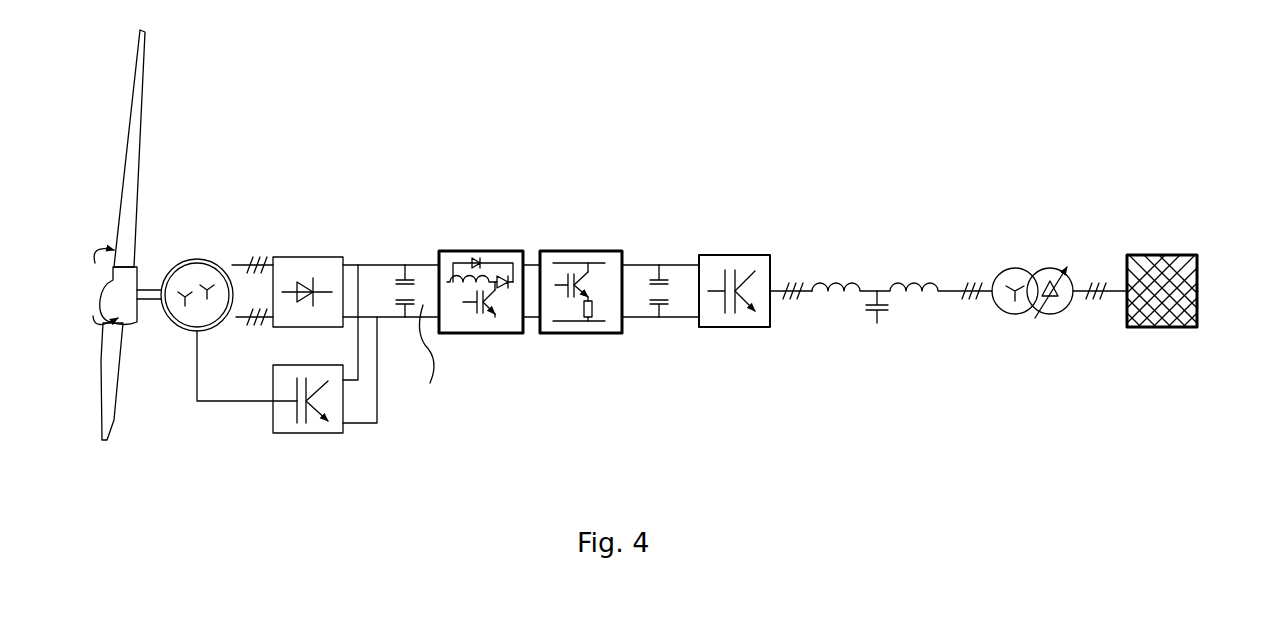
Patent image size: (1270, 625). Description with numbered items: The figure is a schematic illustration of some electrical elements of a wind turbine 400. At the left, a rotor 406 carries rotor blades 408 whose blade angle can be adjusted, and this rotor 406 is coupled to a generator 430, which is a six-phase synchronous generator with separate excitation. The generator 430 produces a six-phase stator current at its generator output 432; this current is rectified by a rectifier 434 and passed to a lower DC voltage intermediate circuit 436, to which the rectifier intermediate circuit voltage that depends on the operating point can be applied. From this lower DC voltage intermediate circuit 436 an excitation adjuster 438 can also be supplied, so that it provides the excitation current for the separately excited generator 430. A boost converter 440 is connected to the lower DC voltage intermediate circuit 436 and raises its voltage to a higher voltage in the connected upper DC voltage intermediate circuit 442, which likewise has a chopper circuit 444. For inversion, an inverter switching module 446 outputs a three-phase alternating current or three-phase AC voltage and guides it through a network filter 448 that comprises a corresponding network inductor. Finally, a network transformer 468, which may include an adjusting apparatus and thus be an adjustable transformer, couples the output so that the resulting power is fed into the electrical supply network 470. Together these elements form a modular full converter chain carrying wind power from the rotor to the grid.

The wind turbine 400 is at (514, 84).
The rotor 406 is at (150, 187).
The rotor blades 408 is at (141, 90).
The generator 430 is at (197, 258).
The generator output 432 is at (240, 247).
The rectifier 434 is at (318, 257).
The lower DC voltage intermediate circuit 436 is at (472, 295).
The excitation adjuster 438 is at (325, 433).
The boost converter 440 is at (482, 333).
The upper DC voltage intermediate circuit 442 is at (585, 296).
The chopper circuit 444 is at (582, 333).
The inverter switching module 446 is at (740, 255).
The network filter 448 is at (840, 253).
The network transformer 468 is at (1037, 250).
The electrical supply network 470 is at (1152, 255).